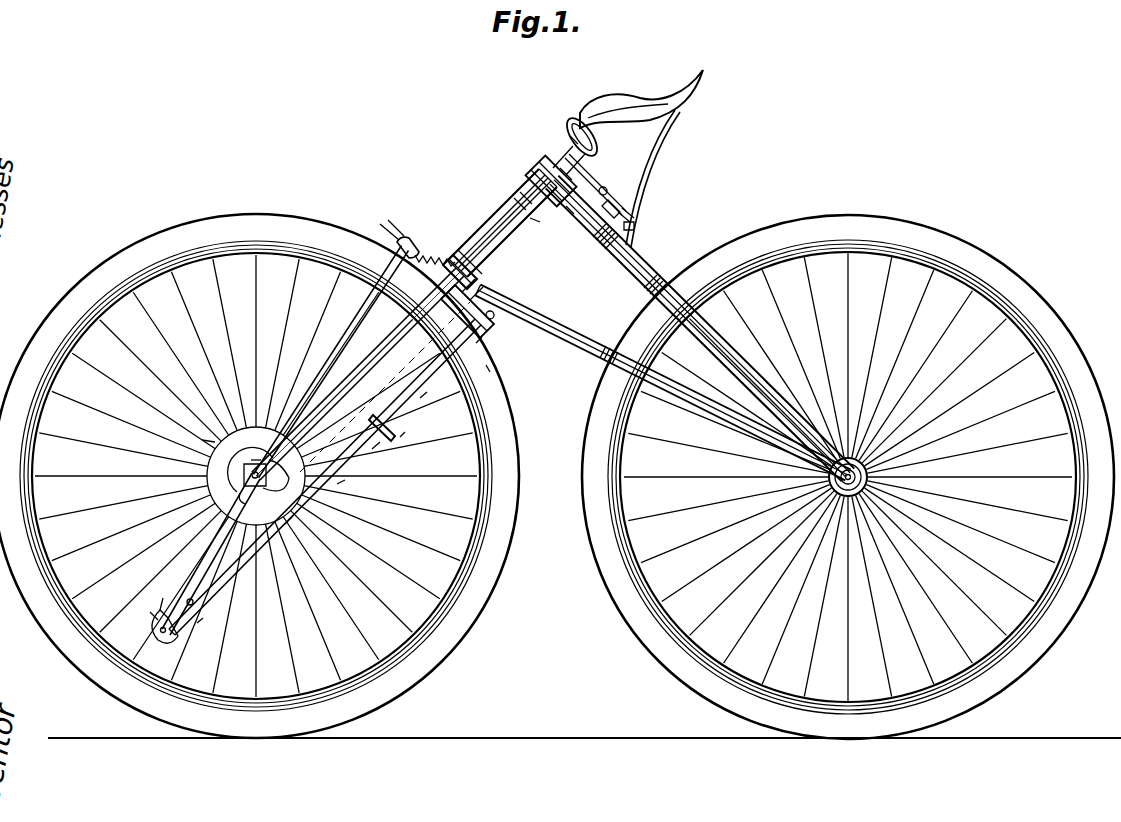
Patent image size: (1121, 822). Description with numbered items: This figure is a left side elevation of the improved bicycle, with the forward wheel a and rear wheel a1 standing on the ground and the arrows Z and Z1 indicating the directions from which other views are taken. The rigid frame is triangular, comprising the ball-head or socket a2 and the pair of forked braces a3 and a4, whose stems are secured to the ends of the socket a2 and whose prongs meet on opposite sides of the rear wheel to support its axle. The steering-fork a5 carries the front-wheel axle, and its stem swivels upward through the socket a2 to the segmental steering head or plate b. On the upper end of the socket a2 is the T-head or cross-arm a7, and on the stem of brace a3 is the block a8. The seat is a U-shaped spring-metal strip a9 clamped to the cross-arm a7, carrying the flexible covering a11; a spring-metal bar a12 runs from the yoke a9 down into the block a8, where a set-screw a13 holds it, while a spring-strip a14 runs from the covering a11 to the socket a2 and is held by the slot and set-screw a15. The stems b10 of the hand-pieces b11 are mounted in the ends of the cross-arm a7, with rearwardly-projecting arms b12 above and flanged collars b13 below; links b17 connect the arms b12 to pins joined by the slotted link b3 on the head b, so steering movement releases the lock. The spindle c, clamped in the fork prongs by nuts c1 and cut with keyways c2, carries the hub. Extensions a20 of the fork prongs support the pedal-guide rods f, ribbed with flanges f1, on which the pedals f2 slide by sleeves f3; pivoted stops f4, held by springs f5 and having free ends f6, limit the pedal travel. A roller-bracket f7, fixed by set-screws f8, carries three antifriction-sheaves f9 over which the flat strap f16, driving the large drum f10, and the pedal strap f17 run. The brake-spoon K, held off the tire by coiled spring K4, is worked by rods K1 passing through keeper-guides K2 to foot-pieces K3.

The forward wheel a is at (440, 656).
The rear wheel a1 is at (643, 635).
The ball-head or socket a2 is at (507, 223).
The forked brace a3 is at (642, 262).
The forked brace a4 is at (530, 306).
The steering-fork a5 is at (378, 338).
The T-head or cross-arm a7 is at (538, 174).
The block a8 is at (630, 215).
The U-shaped spring-metal strip a9 is at (587, 123).
The covering a11 is at (668, 108).
The bar of spring metal a12 is at (650, 150).
The set-screw a13 is at (636, 225).
The spring-strip a14 is at (560, 150).
The slot and set-screw a15 is at (517, 193).
The extension or arm a20 is at (200, 557).
The steering head or plate b is at (592, 187).
The slotted bar or link b3 is at (605, 188).
The stem b10 is at (565, 166).
The hand-piece b11 is at (572, 135).
The rearwardly-projecting arm b12 is at (568, 210).
The flanged collar b13 is at (534, 222).
The link b17 is at (618, 207).
The spindle c is at (233, 472).
The nut c1 is at (255, 460).
The groove or keyway c2 is at (293, 516).
The pedal-guide rod f is at (245, 562).
The longitudinal flange or rib f1 is at (346, 487).
The pedal f2 is at (400, 437).
The sleeve portion f3 is at (397, 423).
The stop f4 is at (170, 638).
The spring f5 is at (150, 612).
The projecting free end f6 is at (163, 598).
The roller-bracket f7 is at (484, 352).
The set-screw f8 is at (482, 337).
The antifriction-sheave f9 is at (492, 316).
The large drum f10 is at (202, 440).
The flat strap f16 is at (372, 449).
The flexible connection or strap f17 is at (420, 398).
The friction blade or spoon K is at (452, 256).
The rod K1 is at (328, 374).
The keeper-guide K2 is at (270, 424).
The foot-piece K3 is at (212, 514).
The coiled spring K4 is at (477, 262).
The arrow Z is at (312, 143).
The arrow Z1 is at (672, 70).